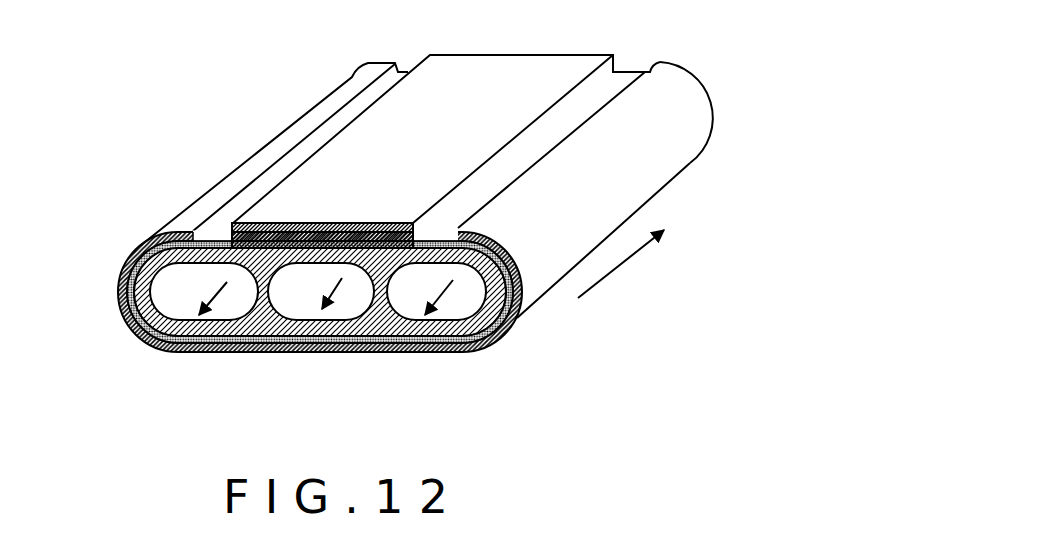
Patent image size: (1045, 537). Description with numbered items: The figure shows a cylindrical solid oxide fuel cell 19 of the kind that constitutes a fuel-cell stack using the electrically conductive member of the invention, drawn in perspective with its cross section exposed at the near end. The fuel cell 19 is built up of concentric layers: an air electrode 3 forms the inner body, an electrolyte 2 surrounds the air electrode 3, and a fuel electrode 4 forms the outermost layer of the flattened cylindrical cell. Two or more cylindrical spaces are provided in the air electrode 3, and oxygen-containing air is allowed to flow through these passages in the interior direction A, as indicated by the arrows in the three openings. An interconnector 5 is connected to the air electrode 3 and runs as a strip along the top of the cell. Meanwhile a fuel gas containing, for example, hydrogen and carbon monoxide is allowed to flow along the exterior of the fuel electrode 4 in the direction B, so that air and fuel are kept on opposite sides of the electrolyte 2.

The fuel cell 19 is at (447, 231).
The electrolyte 2 is at (232, 342).
The air electrode 3 is at (397, 340).
The fuel electrode 4 is at (137, 326).
The interconnector 5 is at (231, 224).